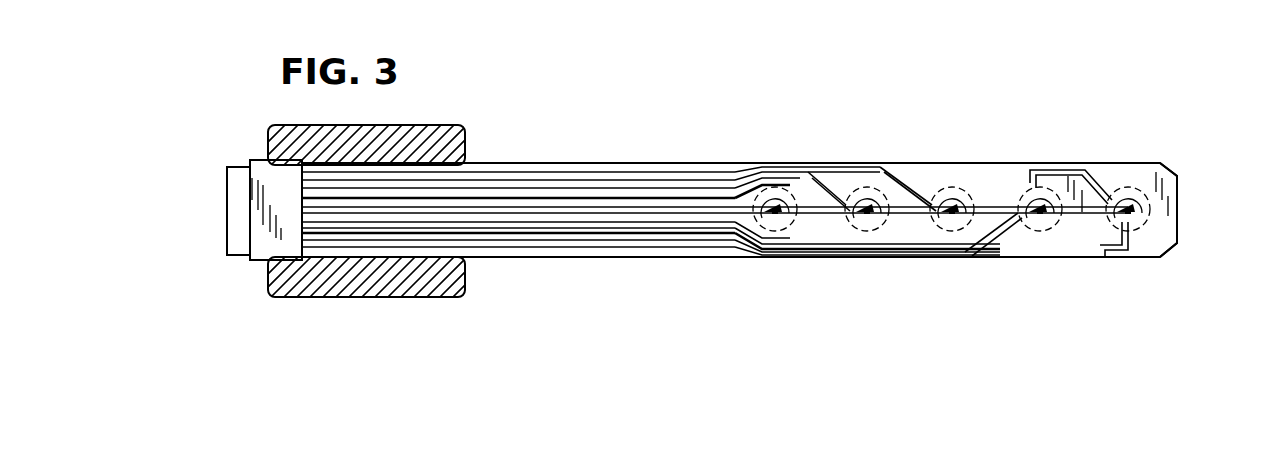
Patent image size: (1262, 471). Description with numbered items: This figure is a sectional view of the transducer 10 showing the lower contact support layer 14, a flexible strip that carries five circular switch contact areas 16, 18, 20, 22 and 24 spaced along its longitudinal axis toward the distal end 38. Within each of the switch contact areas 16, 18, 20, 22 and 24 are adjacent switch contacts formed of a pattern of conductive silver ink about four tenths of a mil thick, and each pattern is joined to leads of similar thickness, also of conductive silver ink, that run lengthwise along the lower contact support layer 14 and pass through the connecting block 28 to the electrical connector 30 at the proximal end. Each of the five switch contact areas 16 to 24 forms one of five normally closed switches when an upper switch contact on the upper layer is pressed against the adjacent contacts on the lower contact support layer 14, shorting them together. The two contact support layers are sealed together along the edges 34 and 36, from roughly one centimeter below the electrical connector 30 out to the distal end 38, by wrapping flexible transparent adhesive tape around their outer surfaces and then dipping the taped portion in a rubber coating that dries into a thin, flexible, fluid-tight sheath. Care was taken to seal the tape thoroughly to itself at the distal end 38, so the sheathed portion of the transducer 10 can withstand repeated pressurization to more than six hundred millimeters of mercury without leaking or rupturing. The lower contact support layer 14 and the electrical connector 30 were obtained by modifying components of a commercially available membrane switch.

The transducer 10 is at (526, 138).
The lower contact support layer 14 is at (1150, 170).
The switch contact area 16 is at (800, 186).
The switch contact area 18 is at (890, 186).
The switch contact area 20 is at (962, 192).
The switch contact area 22 is at (1025, 230).
The switch contact area 24 is at (1113, 238).
The connecting block 28 is at (470, 322).
The electrical connector 30 is at (255, 258).
The edge 34 is at (595, 257).
The edge 36 is at (575, 163).
The distal end 38 is at (1178, 212).